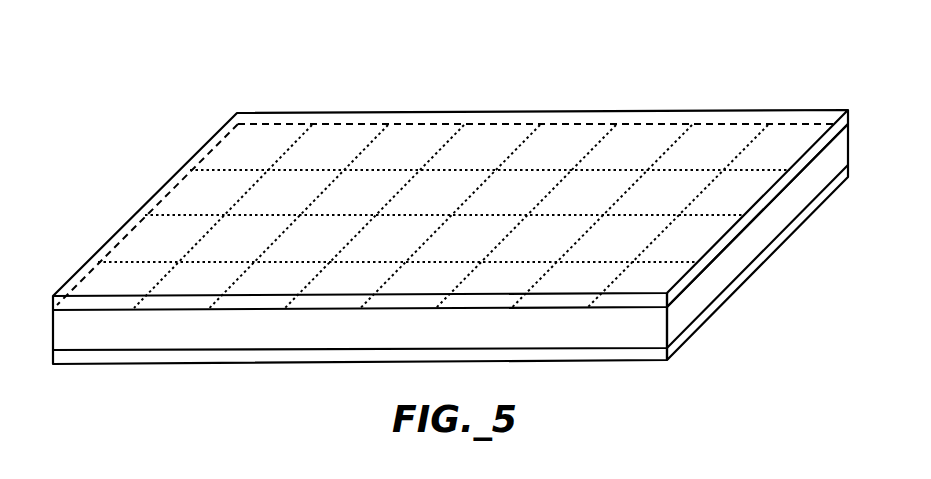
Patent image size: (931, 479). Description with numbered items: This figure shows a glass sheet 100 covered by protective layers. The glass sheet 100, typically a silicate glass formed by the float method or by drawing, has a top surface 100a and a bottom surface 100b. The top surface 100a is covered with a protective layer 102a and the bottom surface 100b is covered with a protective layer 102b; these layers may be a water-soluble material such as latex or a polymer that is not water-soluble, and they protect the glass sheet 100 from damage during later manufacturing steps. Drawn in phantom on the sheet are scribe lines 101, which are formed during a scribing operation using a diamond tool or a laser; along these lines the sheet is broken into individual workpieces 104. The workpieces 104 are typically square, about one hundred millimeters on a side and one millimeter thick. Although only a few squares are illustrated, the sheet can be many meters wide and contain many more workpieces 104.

The glass sheet 100 is at (712, 282).
The top surface 100a is at (117, 310).
The bottom surface 100b is at (562, 350).
The scribe lines 101 is at (553, 170).
The protective layer 102a is at (675, 297).
The protective layer 102b is at (698, 320).
The workpieces 104 is at (377, 202).